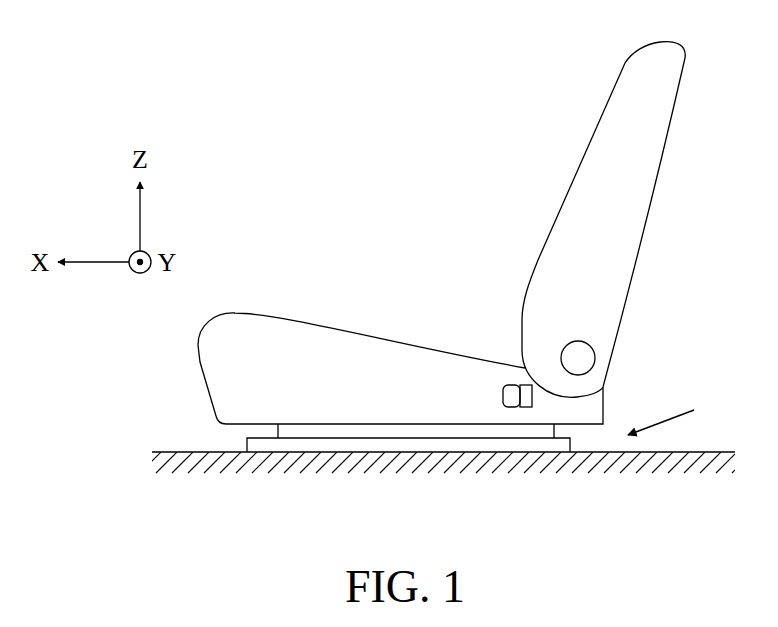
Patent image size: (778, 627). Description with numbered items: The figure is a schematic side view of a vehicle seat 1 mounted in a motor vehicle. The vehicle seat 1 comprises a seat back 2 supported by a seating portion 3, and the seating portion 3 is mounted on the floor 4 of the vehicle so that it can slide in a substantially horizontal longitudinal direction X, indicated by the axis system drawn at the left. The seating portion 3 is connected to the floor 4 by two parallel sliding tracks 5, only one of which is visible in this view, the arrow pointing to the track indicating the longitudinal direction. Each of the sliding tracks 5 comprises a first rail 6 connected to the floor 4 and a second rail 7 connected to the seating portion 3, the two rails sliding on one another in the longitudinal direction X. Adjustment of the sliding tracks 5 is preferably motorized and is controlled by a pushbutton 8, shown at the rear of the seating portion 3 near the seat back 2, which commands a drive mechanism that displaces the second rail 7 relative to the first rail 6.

The vehicle seat 1 is at (478, 268).
The seat back 2 is at (640, 157).
The seating portion 3 is at (285, 332).
The floor 4 is at (192, 452).
The sliding tracks 5 is at (672, 411).
The first rail 6 is at (527, 447).
The second rail 7 is at (305, 430).
The pushbutton 8 is at (518, 396).